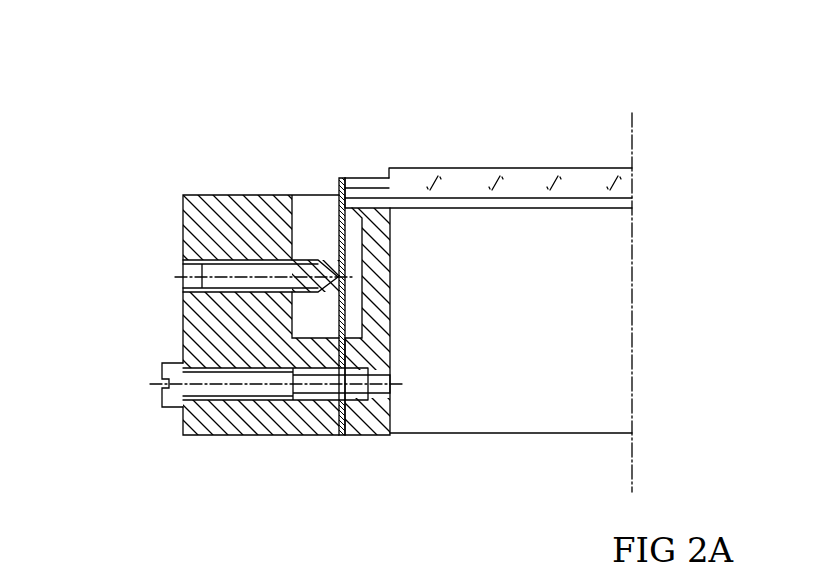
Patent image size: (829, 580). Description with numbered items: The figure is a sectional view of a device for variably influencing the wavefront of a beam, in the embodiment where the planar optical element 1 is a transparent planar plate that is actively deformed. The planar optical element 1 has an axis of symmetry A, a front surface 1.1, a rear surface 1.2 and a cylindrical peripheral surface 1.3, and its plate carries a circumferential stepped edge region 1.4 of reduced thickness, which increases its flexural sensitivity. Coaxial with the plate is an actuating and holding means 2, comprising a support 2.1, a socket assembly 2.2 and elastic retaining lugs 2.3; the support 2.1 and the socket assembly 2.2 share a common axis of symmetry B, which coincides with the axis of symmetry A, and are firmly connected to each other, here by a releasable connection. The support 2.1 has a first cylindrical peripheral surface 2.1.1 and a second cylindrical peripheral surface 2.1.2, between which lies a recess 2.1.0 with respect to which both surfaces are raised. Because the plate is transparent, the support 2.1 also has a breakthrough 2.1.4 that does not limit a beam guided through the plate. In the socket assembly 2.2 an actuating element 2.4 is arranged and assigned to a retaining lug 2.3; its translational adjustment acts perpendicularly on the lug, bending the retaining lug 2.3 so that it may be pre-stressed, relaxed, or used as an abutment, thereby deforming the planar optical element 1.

The planar optical element 1 is at (433, 53).
The front surface 1.1 is at (413, 167).
The rear surface 1.2 is at (403, 208).
The cylindrical peripheral surface 1.3 is at (337, 187).
The stepped edge region 1.4 is at (366, 178).
The actuating and holding means 2 is at (166, 159).
The support 2.1 is at (369, 417).
The recess 2.1.0 is at (362, 238).
The first cylindrical peripheral surface 2.1.1 is at (337, 216).
The second cylindrical peripheral surface 2.1.2 is at (338, 413).
The breakthrough 2.1.4 is at (505, 355).
The socket assembly 2.2 is at (195, 208).
The elastic retaining lug 2.3 is at (337, 297).
The actuating element 2.4 is at (210, 284).
The axis of symmetry A is at (632, 142).
The axis of symmetry B is at (633, 320).